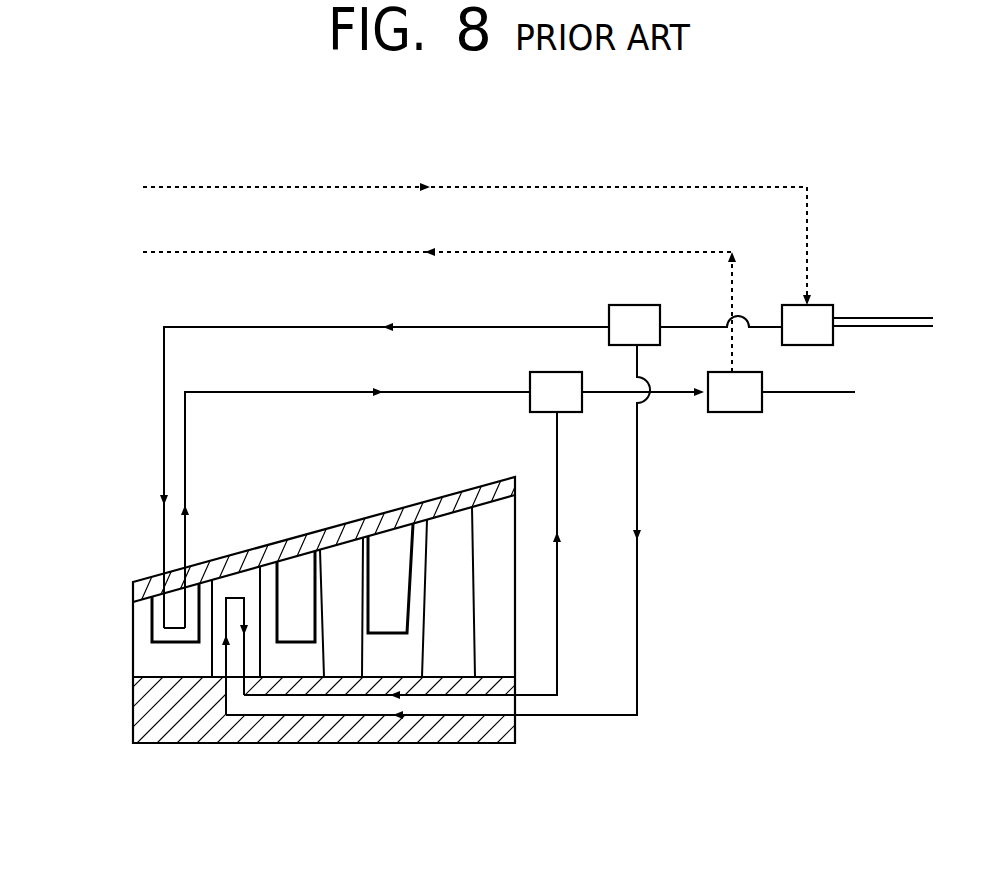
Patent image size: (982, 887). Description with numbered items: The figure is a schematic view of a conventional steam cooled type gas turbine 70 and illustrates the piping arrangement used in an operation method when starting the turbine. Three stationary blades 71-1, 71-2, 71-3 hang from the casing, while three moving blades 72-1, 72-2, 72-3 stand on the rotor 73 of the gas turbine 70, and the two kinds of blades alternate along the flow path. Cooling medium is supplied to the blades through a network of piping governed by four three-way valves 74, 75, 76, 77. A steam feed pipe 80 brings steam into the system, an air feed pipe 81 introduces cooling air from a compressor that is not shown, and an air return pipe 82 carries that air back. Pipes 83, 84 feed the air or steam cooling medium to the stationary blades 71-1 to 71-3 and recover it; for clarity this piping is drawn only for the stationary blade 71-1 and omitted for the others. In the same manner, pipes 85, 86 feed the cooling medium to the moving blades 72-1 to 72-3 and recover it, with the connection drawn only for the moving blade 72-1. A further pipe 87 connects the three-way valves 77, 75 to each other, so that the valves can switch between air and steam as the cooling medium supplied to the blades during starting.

The gas turbine 70 is at (347, 497).
The stationary blade 71-1 is at (147, 600).
The stationary blade 71-2 is at (302, 575).
The stationary blade 71-3 is at (385, 555).
The moving blade 72-1 is at (218, 658).
The moving blade 72-2 is at (333, 657).
The moving blade 72-3 is at (447, 660).
The rotor 73 is at (137, 743).
The three-way valve 74 is at (577, 372).
The three-way valve 75 is at (636, 305).
The three-way valve 76 is at (740, 412).
The three-way valve 77 is at (835, 305).
The steam feed pipe 80 is at (915, 318).
The air feed pipe 81 is at (148, 187).
The air return pipe 82 is at (152, 254).
The pipe 83 is at (164, 327).
The pipe 84 is at (215, 392).
The pipe 85 is at (637, 502).
The pipe 86 is at (557, 573).
The pipe 87 is at (692, 324).